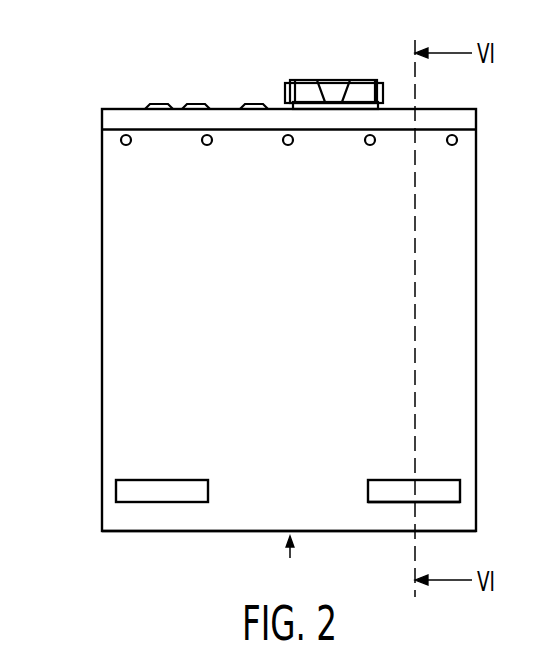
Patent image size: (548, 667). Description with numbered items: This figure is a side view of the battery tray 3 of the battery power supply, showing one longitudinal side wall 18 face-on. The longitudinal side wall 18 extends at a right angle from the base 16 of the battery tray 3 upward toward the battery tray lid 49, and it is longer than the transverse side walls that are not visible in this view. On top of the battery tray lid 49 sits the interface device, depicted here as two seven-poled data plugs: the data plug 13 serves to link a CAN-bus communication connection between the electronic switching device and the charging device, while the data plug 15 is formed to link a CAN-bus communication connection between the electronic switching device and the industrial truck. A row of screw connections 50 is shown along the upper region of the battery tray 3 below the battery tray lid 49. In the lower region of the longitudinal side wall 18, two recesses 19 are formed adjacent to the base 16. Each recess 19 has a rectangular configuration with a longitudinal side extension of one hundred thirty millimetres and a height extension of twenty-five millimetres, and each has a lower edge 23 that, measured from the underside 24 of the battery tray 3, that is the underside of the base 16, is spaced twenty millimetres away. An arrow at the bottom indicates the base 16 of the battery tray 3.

The battery tray 3 is at (467, 218).
The seven-poled data plug 13 is at (362, 90).
The seven-poled data plug 15 is at (305, 90).
The base 16 is at (288, 562).
The longitudinal side wall 18 is at (304, 288).
The recesses 19 is at (203, 490).
The lower edge 23 is at (387, 502).
The underside 24 is at (182, 531).
The battery tray lid 49 is at (123, 118).
The screw connections 50 is at (121, 140).